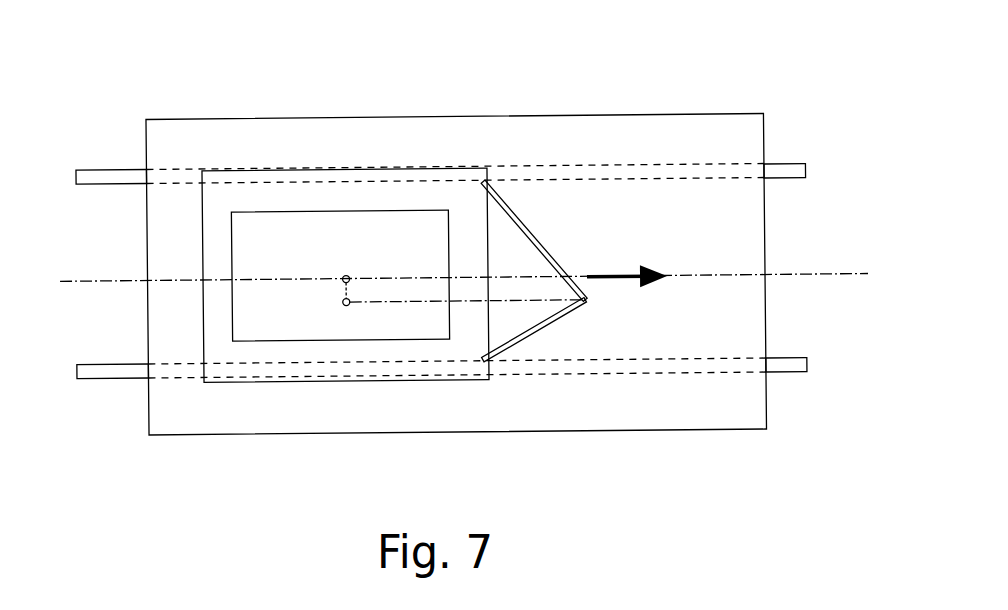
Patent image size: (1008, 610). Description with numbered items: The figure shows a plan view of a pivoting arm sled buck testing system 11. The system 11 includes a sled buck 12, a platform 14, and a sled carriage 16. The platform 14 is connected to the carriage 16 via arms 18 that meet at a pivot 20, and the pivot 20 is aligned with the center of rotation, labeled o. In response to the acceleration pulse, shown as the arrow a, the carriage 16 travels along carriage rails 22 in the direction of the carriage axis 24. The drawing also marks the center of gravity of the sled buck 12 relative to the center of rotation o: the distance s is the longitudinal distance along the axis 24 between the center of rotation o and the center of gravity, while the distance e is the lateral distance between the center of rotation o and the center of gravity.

The pivoting arm sled buck testing system 11 is at (776, 46).
The sled buck 12 is at (347, 225).
The platform 14 is at (400, 350).
The sled carriage 16 is at (192, 422).
The arms 18 is at (528, 236).
The pivot 20 is at (580, 281).
The carriage rails 22 is at (112, 177).
The carriage axis 24 is at (105, 281).